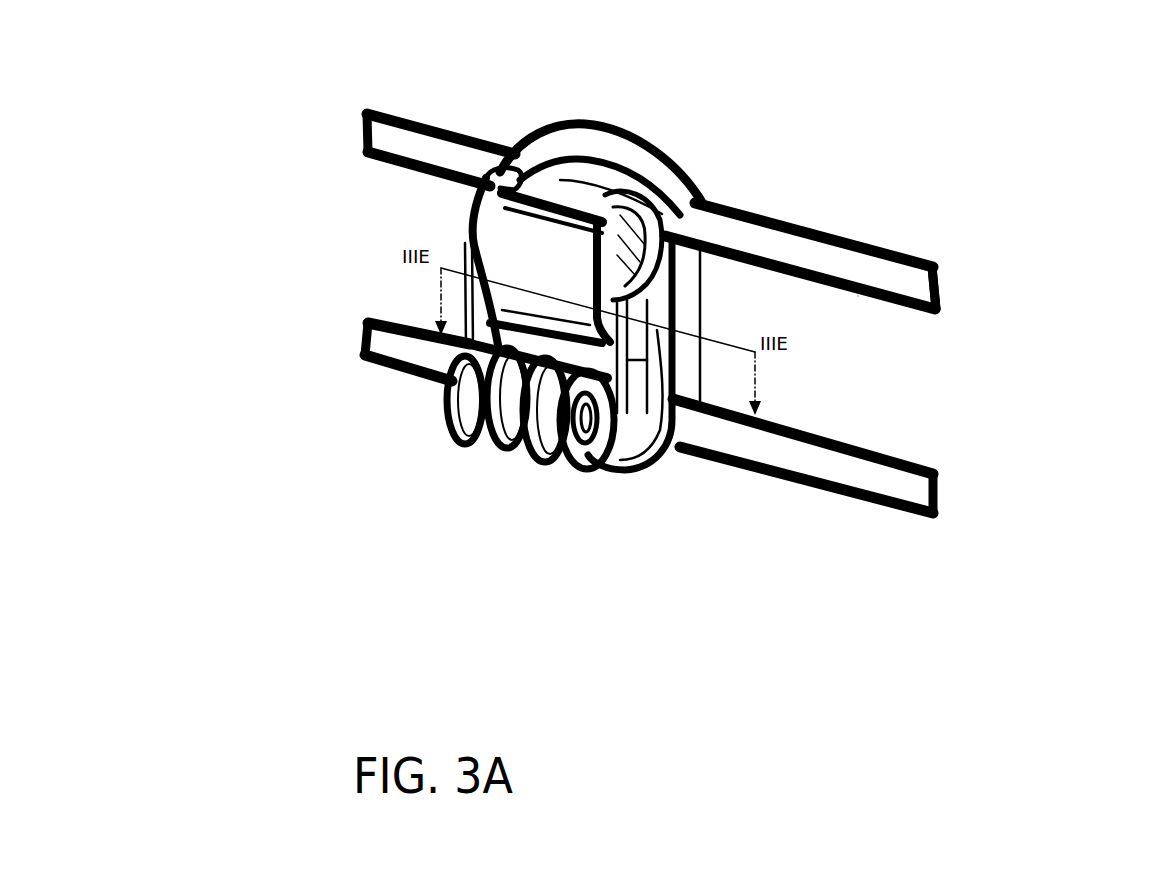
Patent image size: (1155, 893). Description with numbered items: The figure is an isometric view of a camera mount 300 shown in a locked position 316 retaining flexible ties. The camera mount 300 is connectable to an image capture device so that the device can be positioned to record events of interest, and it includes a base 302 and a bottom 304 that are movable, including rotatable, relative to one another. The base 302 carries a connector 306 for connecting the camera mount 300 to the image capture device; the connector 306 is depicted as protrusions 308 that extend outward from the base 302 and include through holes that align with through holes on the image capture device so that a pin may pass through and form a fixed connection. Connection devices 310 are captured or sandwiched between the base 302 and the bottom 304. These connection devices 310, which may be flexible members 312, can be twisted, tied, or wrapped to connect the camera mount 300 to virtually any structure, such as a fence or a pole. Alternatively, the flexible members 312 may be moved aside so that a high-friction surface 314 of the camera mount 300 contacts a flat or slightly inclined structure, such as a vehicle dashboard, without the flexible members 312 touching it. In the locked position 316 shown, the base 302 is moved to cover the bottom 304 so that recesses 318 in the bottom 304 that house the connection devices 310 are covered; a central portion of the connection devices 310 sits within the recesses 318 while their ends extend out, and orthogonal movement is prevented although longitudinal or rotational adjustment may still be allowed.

The camera mount 300 is at (744, 137).
The base 302 is at (627, 463).
The bottom 304 is at (602, 140).
The connector 306 is at (377, 416).
The protrusions 308 is at (478, 452).
The connection devices 310 is at (961, 251).
The flexible members 312 is at (858, 296).
The surface 314 is at (637, 133).
The locked position 316 is at (768, 554).
The recesses 318 is at (778, 208).